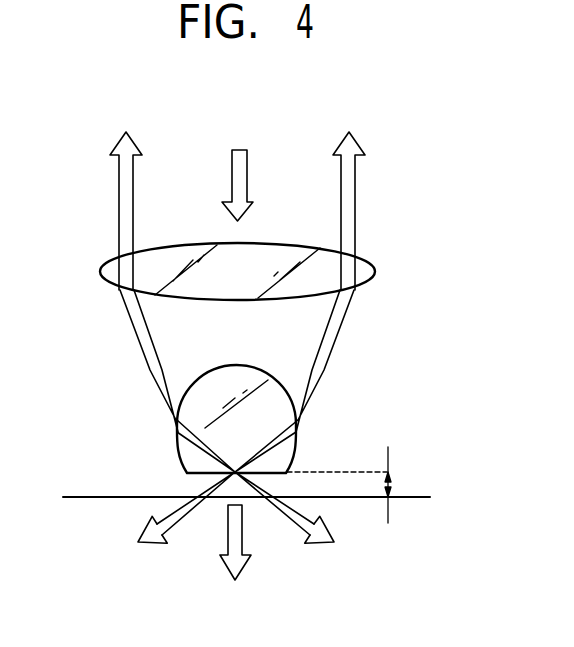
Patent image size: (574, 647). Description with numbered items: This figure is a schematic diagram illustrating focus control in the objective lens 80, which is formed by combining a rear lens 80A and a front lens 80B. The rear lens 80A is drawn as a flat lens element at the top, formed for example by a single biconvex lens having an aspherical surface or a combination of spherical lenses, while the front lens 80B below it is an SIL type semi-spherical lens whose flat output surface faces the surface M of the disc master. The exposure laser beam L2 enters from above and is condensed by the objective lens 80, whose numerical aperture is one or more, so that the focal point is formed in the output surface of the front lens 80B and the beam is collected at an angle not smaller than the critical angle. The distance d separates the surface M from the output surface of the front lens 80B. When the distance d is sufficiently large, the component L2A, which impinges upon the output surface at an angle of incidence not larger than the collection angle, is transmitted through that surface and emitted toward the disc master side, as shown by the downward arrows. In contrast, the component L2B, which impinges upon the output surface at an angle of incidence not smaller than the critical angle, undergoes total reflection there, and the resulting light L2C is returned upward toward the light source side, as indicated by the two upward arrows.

The exposure laser beam L2 is at (243, 168).
The returned light component L2C is at (122, 202).
The objective lens 80 is at (273, 358).
The rear lens 80A is at (362, 273).
The front lens 80B is at (192, 460).
The totally reflected component L2B is at (327, 348).
The transmitted component L2A is at (237, 537).
The surface of the disc master M is at (85, 496).
The distance d is at (350, 485).